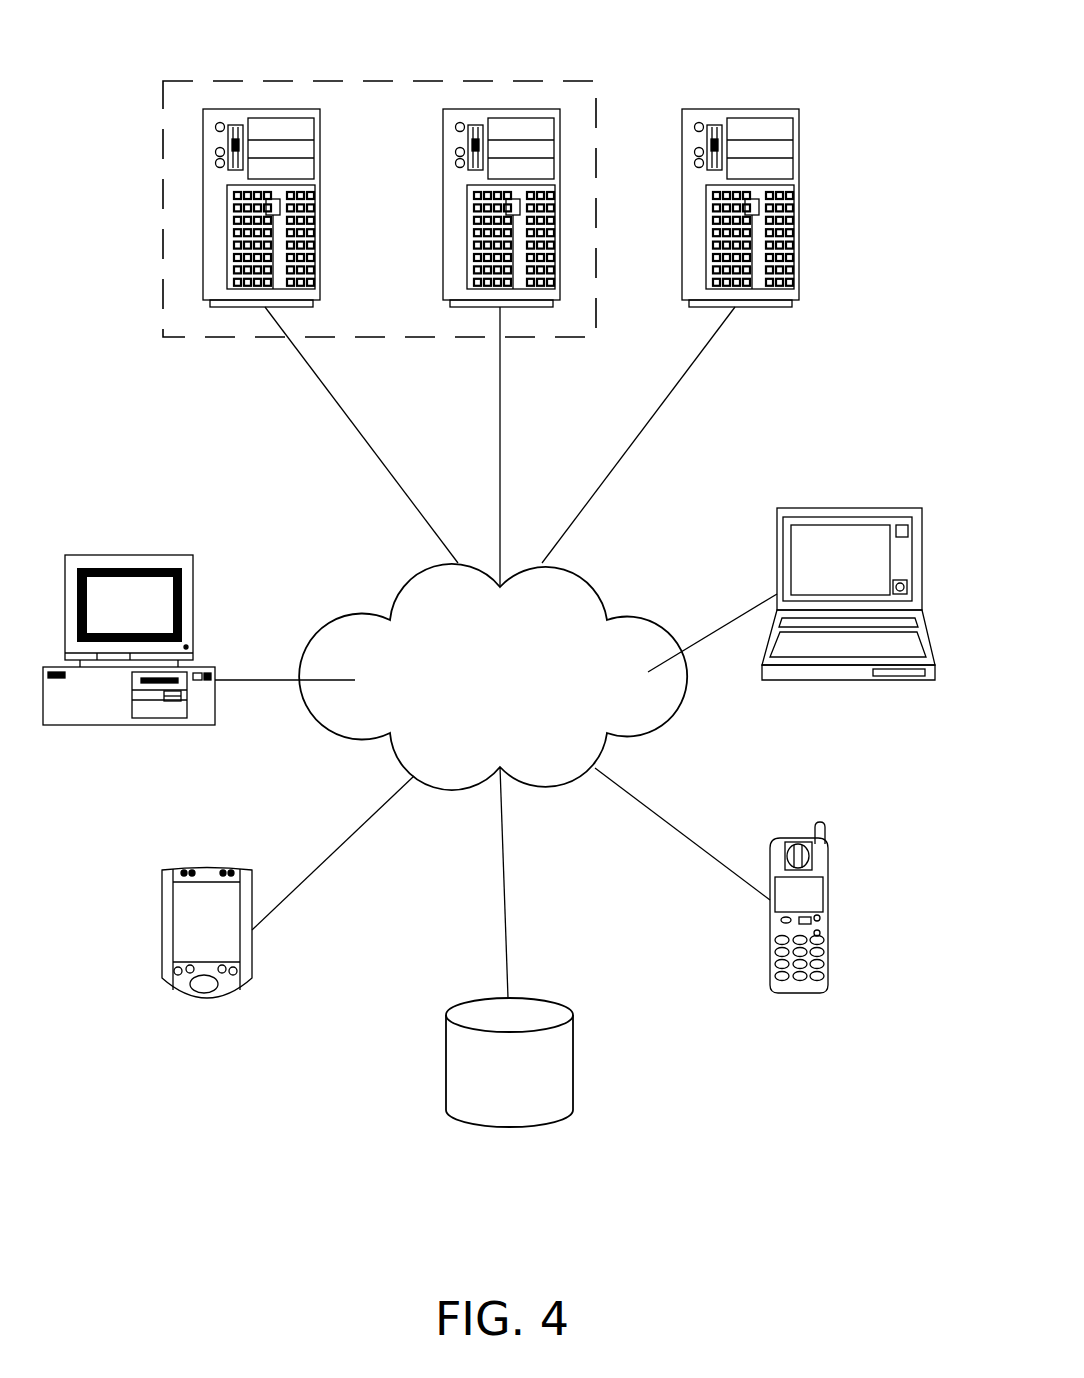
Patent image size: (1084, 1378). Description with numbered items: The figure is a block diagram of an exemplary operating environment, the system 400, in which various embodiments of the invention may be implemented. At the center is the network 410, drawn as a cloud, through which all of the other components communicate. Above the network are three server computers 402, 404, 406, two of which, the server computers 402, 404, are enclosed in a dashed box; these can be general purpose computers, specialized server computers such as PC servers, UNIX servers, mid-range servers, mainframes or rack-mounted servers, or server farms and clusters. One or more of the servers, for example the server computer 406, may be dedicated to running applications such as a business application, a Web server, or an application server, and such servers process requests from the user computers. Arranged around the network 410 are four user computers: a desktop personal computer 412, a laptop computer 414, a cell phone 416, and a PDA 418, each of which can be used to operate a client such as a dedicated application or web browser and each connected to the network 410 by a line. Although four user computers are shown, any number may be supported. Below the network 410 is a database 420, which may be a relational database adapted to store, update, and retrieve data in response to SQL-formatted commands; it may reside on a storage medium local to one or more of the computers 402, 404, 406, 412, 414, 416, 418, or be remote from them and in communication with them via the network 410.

The system 400 is at (903, 117).
The server computer 402 is at (243, 108).
The server computer 404 is at (497, 108).
The server computer 406 is at (800, 208).
The network 410 is at (485, 731).
The user computer 412 is at (125, 553).
The user computer 414 is at (845, 508).
The user computer 416 is at (795, 995).
The user computer 418 is at (207, 1000).
The database 420 is at (494, 1116).